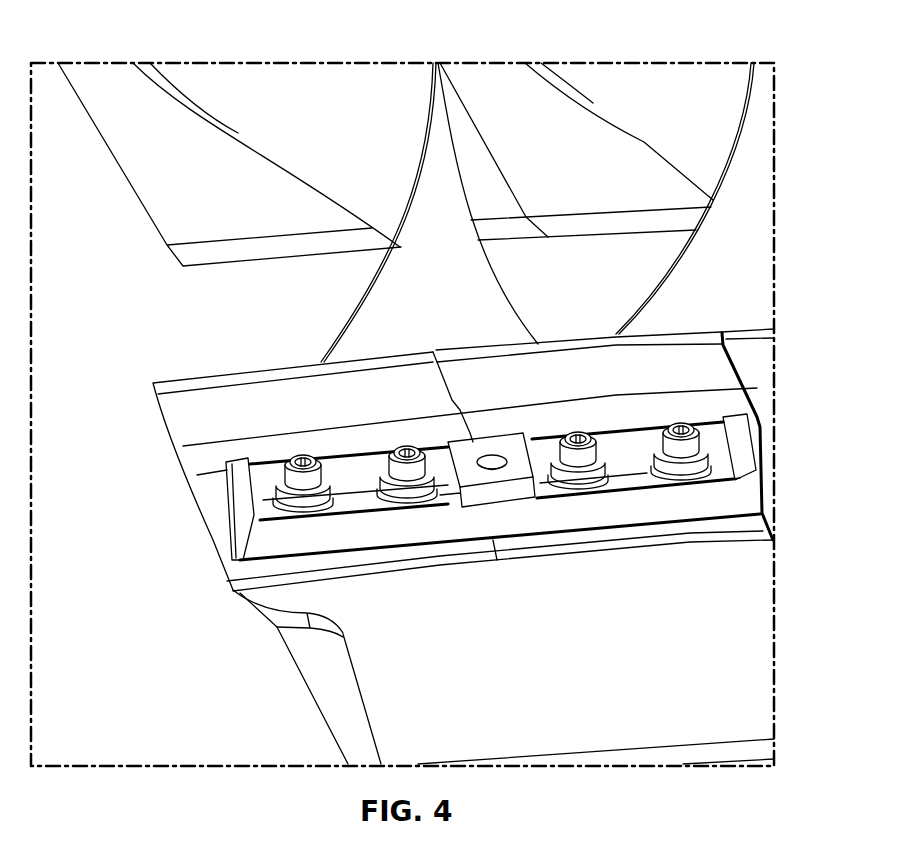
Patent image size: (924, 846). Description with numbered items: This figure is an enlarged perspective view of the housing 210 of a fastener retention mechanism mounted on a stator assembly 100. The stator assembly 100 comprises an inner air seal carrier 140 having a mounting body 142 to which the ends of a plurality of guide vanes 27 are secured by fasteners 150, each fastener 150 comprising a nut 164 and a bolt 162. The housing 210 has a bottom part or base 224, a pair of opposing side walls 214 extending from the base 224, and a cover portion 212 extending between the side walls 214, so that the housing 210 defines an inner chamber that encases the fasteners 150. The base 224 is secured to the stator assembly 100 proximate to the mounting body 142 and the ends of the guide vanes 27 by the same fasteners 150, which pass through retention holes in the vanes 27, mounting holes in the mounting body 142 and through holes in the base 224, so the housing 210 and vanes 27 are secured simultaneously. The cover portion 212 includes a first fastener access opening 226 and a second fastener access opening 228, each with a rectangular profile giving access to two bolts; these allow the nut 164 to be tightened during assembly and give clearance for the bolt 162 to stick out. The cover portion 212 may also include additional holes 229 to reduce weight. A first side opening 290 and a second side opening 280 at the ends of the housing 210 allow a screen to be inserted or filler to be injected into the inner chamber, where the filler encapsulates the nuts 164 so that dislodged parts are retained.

The stator assembly 100 is at (97, 29).
The guide vanes 27 is at (423, 257).
The inner air seal carrier 140 is at (393, 677).
The mounting body 142 is at (262, 600).
The fasteners 150 is at (694, 413).
The bolt 162 is at (733, 483).
The nut 164 is at (653, 449).
The housing 210 is at (302, 543).
The cover portion 212 is at (502, 491).
The side walls 214 is at (433, 500).
The base 224 is at (357, 507).
The first fastener access opening 226 is at (361, 518).
The second fastener access opening 228 is at (630, 500).
The holes 229 is at (499, 447).
The second side opening 280 is at (761, 427).
The first side opening 290 is at (227, 517).